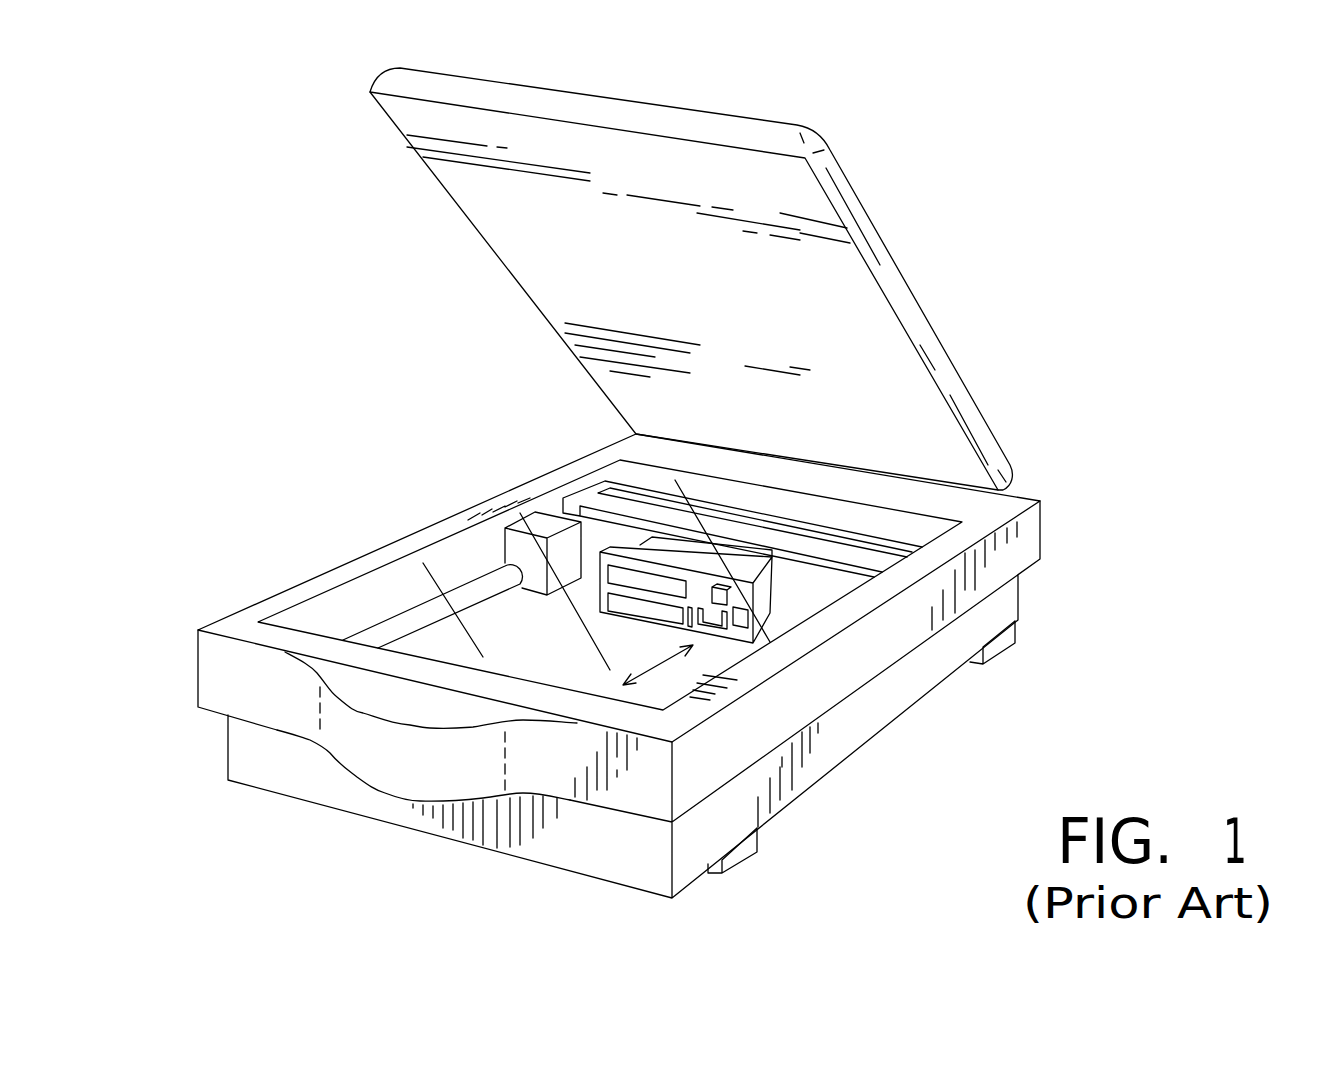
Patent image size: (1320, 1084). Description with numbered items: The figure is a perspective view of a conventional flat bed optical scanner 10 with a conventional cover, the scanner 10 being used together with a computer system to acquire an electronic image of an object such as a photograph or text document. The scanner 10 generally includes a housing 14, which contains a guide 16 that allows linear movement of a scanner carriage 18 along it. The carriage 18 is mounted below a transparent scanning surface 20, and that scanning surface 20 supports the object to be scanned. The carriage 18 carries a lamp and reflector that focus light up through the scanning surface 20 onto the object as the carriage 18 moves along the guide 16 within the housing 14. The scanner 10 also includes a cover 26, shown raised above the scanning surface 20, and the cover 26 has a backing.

The scanner 10 is at (227, 288).
The housing 14 is at (202, 671).
The guide 16 is at (477, 594).
The scanner carriage 18 is at (580, 494).
The transparent scanning surface 20 is at (446, 553).
The cover 26 is at (948, 348).